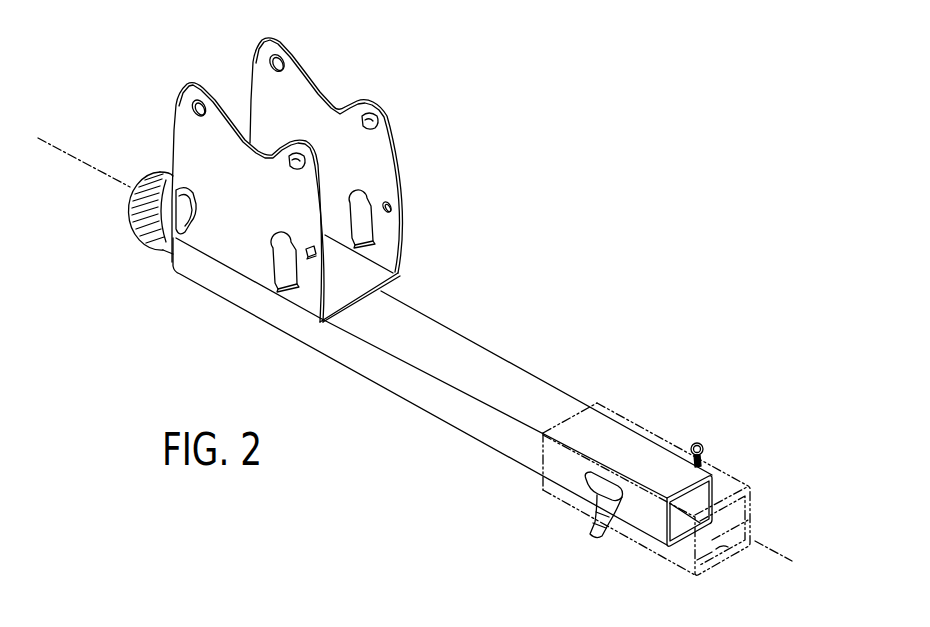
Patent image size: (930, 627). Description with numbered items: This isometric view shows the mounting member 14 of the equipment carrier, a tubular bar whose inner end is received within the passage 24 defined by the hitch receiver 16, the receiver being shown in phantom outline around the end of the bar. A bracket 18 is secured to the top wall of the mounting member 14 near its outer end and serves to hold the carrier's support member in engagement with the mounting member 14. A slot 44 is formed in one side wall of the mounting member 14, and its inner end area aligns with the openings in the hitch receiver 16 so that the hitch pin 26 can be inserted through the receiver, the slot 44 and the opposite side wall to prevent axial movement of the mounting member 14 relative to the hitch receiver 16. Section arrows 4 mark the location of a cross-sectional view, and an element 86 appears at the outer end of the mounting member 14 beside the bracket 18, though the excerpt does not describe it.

The section line 4- 4 is at (46, 139).
The mounting member 14 is at (469, 340).
The hitch receiver 16 is at (735, 479).
The mounting bracket 18 is at (395, 121).
The passage 24 is at (737, 557).
The hitch pin 26 is at (592, 538).
The slot 44 is at (699, 442).
The knob 86 is at (149, 243).